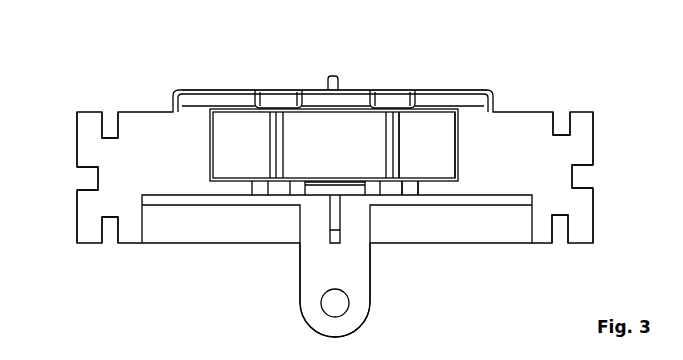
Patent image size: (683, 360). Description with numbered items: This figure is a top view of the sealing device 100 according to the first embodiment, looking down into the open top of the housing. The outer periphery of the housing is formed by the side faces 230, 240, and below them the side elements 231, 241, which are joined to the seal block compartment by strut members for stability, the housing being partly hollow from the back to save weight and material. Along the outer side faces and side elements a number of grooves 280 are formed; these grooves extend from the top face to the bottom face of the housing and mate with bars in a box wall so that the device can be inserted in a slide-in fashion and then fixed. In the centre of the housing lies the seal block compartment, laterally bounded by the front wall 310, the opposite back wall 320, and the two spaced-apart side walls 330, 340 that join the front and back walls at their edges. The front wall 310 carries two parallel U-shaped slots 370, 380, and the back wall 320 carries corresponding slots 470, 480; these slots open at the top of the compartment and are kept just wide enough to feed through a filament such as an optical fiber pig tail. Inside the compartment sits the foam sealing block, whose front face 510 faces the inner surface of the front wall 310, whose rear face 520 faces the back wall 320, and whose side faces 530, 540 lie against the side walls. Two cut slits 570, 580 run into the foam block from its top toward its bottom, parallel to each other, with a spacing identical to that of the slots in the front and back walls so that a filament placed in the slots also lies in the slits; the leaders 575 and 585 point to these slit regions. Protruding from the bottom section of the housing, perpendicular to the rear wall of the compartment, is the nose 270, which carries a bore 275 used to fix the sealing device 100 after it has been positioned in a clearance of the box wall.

The sealing device 100 is at (44, 352).
The side face 230 is at (595, 143).
The side element 231 is at (582, 196).
The side face 240 is at (77, 140).
The side element 241 is at (82, 214).
The nose 270 is at (320, 336).
The bore 275 is at (338, 305).
The grooves 280 is at (110, 120).
The front wall 310 is at (233, 88).
The back wall 320 is at (210, 200).
The side wall 330 is at (458, 152).
The side wall 340 is at (212, 152).
The slot 370 is at (394, 82).
The slot 380 is at (290, 80).
The slot 470 is at (390, 190).
The slot 480 is at (283, 190).
The front face 510 is at (260, 92).
The rear face 520 is at (403, 183).
The side face 530 is at (455, 180).
The side face 540 is at (216, 168).
The slit 570 is at (378, 138).
The right pin contact 575 is at (400, 148).
The slit 580 is at (290, 145).
The left pin contact 585 is at (268, 148).